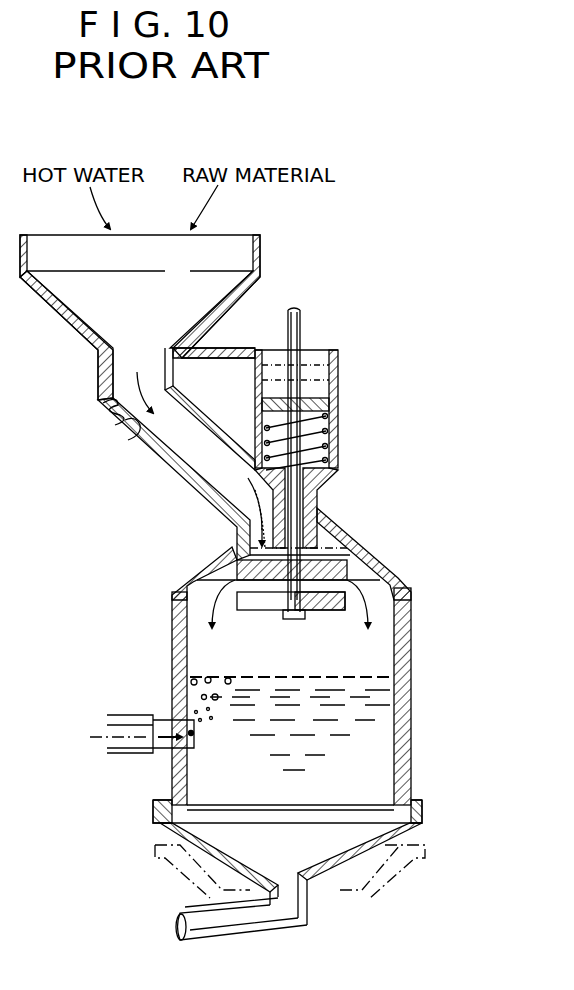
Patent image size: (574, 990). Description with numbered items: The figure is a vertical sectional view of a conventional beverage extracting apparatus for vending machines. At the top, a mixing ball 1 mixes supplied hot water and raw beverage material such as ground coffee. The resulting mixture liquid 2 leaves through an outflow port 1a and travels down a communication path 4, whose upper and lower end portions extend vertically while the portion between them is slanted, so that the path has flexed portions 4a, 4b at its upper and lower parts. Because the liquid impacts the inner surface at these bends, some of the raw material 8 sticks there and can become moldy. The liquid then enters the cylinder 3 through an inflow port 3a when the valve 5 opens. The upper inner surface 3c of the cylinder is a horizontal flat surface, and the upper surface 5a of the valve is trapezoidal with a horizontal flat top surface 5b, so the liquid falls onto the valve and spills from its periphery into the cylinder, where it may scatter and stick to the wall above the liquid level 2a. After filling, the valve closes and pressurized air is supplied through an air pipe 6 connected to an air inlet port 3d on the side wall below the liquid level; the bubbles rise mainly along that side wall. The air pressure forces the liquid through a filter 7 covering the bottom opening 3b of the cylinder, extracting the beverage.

The mixing ball 1 is at (262, 270).
The outflow port 1a is at (143, 355).
The communication path 4 is at (185, 452).
The flexed portion 4a is at (110, 403).
The flexed portion 4b is at (247, 473).
The raw material 8 is at (140, 425).
The inflow port 3a is at (320, 552).
The cylinder 3 is at (410, 632).
The upper inner surface 3c is at (383, 578).
The upper surface 5a is at (212, 556).
The horizontal flat top surface 5b is at (243, 555).
The valve 5 is at (268, 605).
The mixture liquid 2 is at (382, 720).
The liquid level 2a is at (394, 677).
The air pipe 6 is at (123, 714).
The air inlet port 3d is at (187, 740).
The filter 7 is at (375, 804).
The bottom opening 3b is at (281, 798).